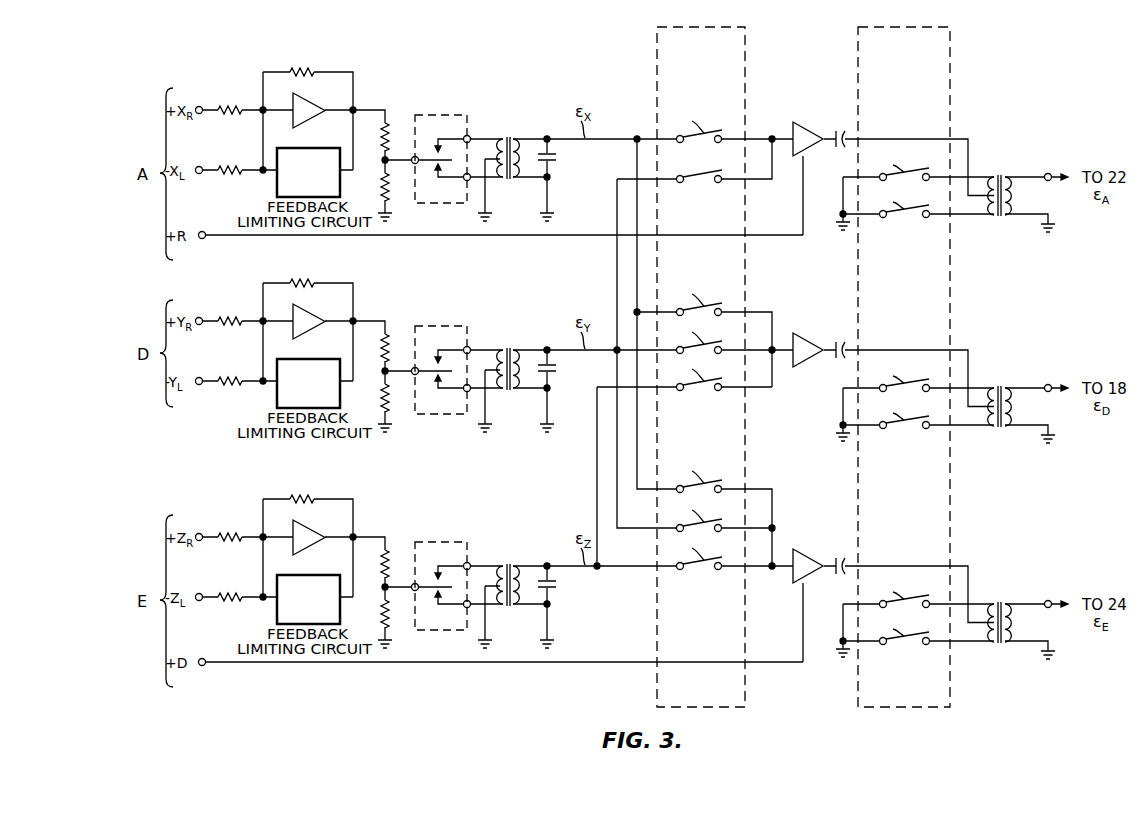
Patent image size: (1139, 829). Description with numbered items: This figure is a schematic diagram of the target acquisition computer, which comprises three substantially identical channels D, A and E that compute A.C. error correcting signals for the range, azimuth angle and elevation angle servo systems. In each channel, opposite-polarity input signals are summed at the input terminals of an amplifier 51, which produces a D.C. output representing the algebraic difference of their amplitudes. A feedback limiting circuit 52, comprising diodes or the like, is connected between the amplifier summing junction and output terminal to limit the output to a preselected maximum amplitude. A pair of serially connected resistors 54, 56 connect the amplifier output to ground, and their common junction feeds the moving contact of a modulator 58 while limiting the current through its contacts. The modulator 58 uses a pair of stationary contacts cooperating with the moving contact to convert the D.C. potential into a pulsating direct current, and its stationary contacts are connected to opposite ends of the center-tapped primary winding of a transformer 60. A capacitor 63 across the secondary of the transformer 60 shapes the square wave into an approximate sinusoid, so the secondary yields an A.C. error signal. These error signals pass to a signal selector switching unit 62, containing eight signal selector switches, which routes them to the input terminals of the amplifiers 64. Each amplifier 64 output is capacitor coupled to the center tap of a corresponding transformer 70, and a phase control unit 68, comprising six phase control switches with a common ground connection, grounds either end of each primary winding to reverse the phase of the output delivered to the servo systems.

The amplifier 51 is at (310, 108).
The feedback limiting circuit 52 is at (277, 177).
The resistor 54 is at (390, 134).
The resistor 56 is at (390, 190).
The modulator 58 is at (467, 118).
The transformer 60 is at (510, 183).
The signal selector switching unit 62 is at (745, 84).
The capacitor 63 is at (555, 157).
The amplifier 64 is at (803, 130).
The phase control unit 68 is at (950, 84).
The transformer 70 is at (1001, 174).